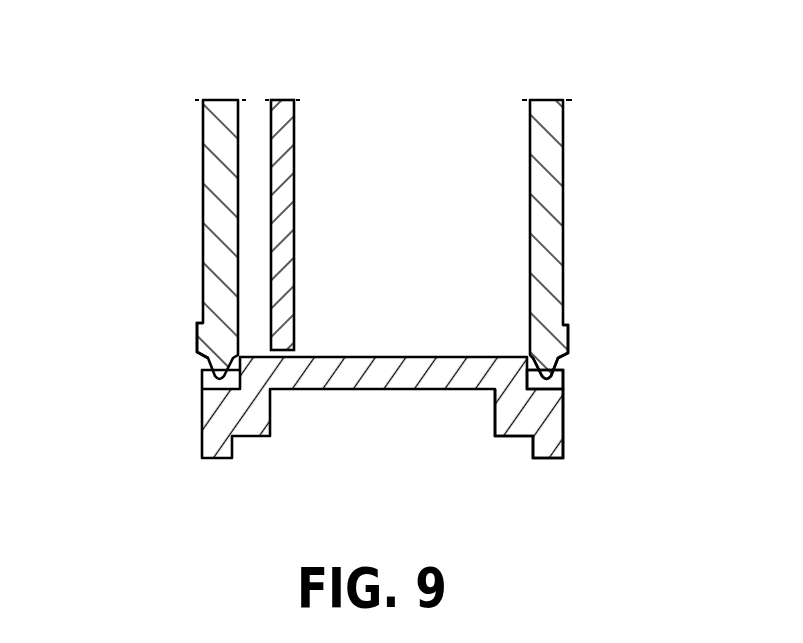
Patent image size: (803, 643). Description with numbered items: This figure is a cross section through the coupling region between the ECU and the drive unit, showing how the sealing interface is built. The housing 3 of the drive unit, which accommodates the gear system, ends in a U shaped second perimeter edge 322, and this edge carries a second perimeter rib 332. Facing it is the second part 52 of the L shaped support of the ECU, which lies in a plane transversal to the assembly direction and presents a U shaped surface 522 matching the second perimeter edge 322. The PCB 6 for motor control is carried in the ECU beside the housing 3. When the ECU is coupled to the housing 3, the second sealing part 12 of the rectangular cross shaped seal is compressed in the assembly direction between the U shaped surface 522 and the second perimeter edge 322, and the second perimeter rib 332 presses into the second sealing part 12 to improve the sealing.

The housing 3 is at (552, 147).
The PCB 6 is at (282, 125).
The second part 52 is at (375, 377).
The second perimeter edge 322 is at (199, 353).
The second perimeter rib 332 is at (561, 365).
The second sealing part 12 is at (564, 382).
The U shaped surface 522 is at (553, 396).